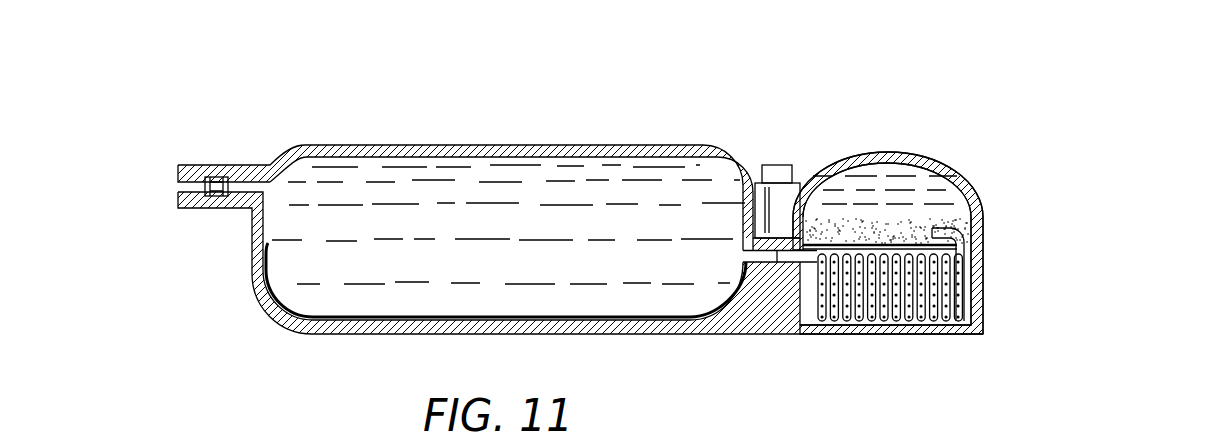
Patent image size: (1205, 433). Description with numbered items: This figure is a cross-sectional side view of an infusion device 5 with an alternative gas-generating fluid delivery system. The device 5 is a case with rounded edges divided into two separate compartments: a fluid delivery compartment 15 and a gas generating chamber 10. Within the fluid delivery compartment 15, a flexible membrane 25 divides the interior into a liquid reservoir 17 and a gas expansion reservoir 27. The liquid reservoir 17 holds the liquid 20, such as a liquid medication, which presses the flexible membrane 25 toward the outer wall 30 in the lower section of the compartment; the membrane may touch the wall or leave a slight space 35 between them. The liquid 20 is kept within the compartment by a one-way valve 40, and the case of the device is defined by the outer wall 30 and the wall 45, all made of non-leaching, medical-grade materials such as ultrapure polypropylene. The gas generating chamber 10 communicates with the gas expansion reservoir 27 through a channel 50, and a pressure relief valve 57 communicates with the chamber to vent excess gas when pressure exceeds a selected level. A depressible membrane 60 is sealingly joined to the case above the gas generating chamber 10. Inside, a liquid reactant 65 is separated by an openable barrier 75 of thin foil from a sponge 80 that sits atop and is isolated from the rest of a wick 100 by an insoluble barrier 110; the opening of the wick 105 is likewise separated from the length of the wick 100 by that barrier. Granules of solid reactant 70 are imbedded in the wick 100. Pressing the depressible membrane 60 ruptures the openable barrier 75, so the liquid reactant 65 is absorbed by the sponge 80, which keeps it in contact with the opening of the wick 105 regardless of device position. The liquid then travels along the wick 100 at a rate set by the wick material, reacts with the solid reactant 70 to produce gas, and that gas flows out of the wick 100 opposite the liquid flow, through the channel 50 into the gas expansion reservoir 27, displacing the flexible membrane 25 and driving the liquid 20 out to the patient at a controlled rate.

The infusion device 5 is at (600, 77).
The gas generating chamber 10 is at (1059, 101).
The fluid delivery compartment 15 is at (259, 96).
The liquid reservoir 17 is at (458, 180).
The liquid 20 is at (323, 187).
The flexible membrane 25 is at (258, 283).
The gas expansion reservoir 27 is at (485, 332).
The outer wall 30 is at (345, 334).
The space 35 is at (718, 311).
The one-way valve 40 is at (213, 177).
The wall 45 is at (612, 147).
The channel 50 is at (762, 262).
The pressure relief valve 57 is at (780, 165).
The depressible membrane 60 is at (890, 152).
The liquid reactant 65 is at (918, 167).
The solid reactant 70 is at (873, 324).
The openable barrier 75 is at (945, 215).
The sponge 80 is at (873, 213).
The wick 100 is at (978, 292).
The opening of the wick 105 is at (930, 233).
The insoluble barrier 110 is at (837, 213).